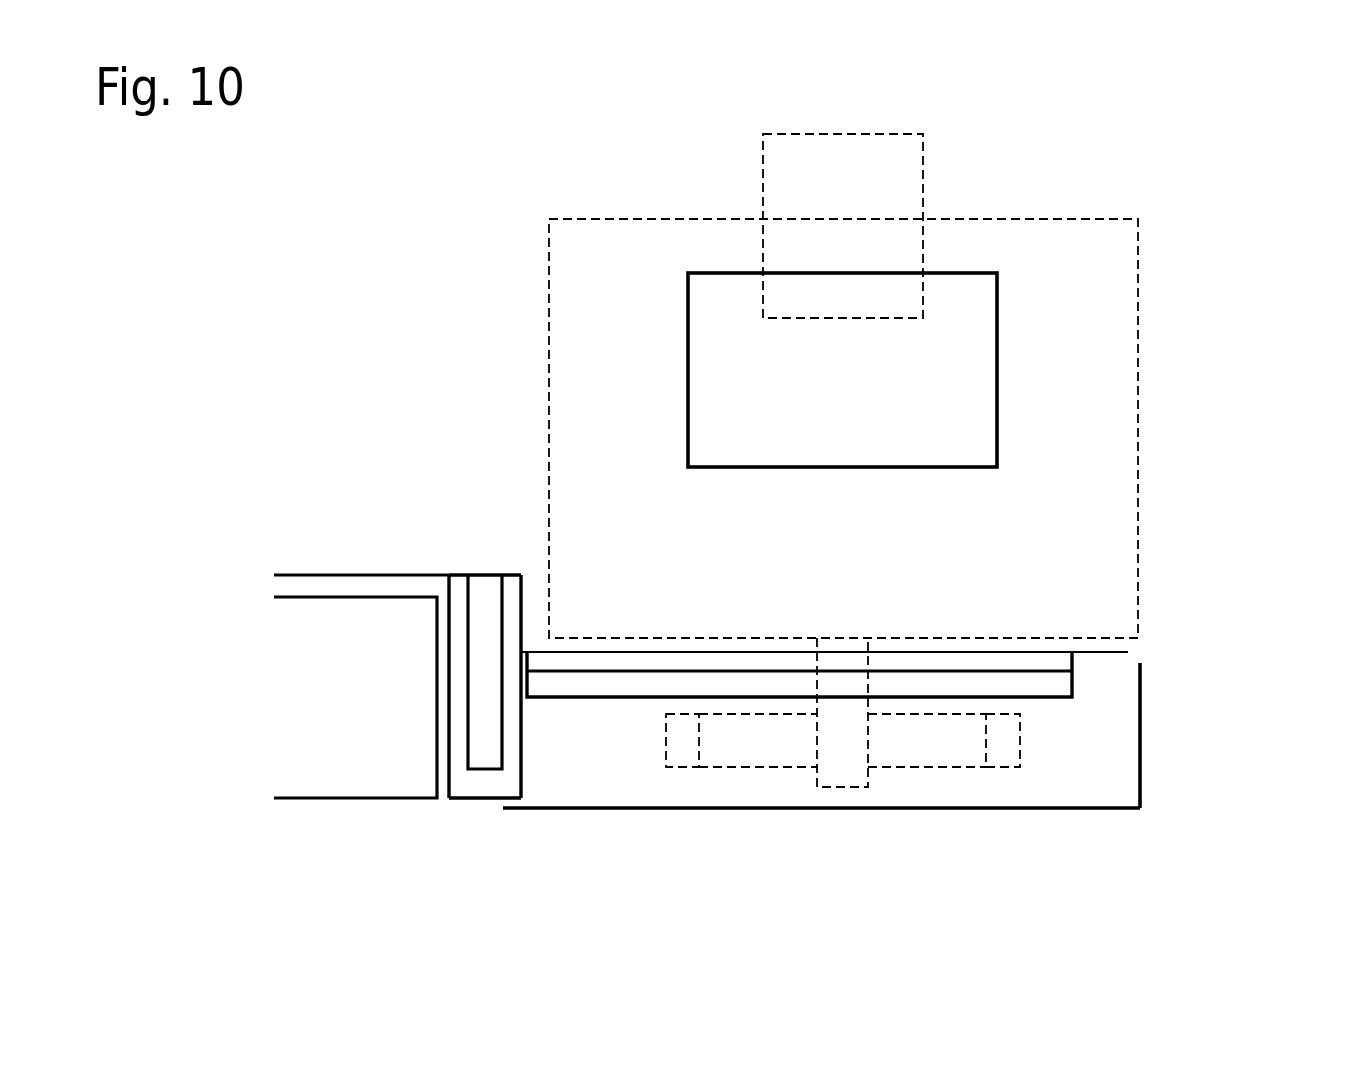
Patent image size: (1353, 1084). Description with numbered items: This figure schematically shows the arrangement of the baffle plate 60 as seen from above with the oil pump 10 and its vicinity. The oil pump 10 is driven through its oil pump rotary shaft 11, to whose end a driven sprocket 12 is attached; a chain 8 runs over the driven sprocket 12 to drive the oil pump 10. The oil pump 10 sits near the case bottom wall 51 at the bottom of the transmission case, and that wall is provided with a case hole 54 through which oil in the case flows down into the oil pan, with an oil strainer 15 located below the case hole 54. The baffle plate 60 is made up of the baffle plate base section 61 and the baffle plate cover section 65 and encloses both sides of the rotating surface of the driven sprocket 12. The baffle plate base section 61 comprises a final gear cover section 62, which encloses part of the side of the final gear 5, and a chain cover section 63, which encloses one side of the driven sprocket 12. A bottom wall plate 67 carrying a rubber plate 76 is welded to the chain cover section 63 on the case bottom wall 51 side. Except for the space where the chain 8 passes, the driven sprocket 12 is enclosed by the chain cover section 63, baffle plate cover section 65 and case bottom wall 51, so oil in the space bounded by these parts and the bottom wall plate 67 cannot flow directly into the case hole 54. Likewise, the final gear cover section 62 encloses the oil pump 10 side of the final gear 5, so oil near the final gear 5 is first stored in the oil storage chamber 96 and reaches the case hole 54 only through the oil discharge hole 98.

The final gear 5 is at (372, 775).
The chain 8 is at (680, 752).
The oil pump 10 is at (1138, 320).
The oil pump rotary shaft 11 is at (835, 787).
The driven sprocket 12 is at (921, 752).
The oil strainer 15 is at (923, 172).
The case bottom wall 51 is at (1195, 452).
The case hole 54 is at (1000, 378).
The baffle plate 60 is at (582, 832).
The baffle plate base section 61 is at (340, 574).
The final gear cover section 62 is at (423, 575).
The chain cover section 63 is at (1010, 652).
The baffle plate cover section 65 is at (1140, 753).
The bottom wall plate 67 is at (902, 660).
The rubber plate 76 is at (1055, 683).
The oil storage chamber 96 is at (467, 782).
The oil discharge hole 98 is at (470, 600).